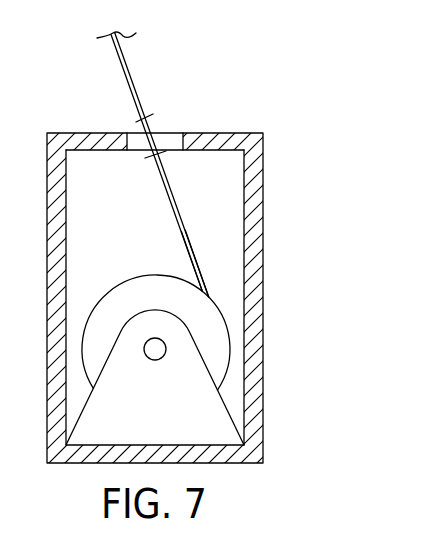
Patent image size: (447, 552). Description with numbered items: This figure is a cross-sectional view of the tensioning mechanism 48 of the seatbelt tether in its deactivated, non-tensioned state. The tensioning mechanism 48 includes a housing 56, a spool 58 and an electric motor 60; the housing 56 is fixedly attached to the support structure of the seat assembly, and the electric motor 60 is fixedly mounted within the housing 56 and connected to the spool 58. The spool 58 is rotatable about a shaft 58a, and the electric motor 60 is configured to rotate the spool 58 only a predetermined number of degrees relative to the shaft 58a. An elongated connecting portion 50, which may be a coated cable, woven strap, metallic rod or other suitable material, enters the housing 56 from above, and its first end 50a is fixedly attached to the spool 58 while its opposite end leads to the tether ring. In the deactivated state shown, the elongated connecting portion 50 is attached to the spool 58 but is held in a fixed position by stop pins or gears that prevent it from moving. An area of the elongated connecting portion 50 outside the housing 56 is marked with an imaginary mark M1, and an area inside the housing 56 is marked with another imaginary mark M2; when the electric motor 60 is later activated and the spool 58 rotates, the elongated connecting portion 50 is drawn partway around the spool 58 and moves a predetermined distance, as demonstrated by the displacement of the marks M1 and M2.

The tensioning mechanism 48 is at (277, 170).
The housing 56 is at (219, 133).
The elongated connecting portion 50 is at (131, 74).
The first end of the elongated connecting portion 50a is at (184, 230).
The spool 58 is at (228, 327).
The shaft 58a is at (156, 350).
The electric motor 60 is at (185, 418).
The imaginary mark M1 is at (138, 120).
The imaginary mark M2 is at (148, 162).